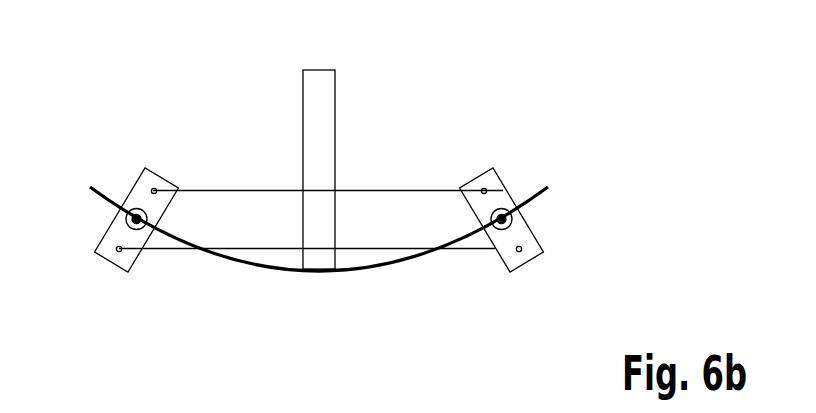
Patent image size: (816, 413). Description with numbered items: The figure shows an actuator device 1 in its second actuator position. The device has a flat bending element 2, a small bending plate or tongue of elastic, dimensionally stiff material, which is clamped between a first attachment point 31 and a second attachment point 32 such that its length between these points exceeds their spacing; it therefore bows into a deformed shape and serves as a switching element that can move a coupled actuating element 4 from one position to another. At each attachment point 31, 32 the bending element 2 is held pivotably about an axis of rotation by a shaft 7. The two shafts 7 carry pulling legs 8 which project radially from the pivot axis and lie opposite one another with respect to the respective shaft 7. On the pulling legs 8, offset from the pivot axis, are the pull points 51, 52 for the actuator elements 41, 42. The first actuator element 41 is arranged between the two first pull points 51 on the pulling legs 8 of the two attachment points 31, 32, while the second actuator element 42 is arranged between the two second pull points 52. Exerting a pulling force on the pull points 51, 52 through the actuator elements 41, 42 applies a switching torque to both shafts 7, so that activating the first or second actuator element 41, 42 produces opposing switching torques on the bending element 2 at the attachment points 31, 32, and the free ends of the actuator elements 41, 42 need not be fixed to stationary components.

The actuator device 1 is at (584, 57).
The bending element 2 is at (355, 272).
The actuating element 4 is at (323, 151).
The shaft 7 is at (150, 209).
The pulling leg 8 is at (147, 182).
The first attachment point 31 is at (125, 218).
The second attachment point 32 is at (507, 217).
The first actuator element 41 is at (243, 189).
The second actuator element 42 is at (245, 250).
The first pull point 51 is at (154, 188).
The second pull point 52 is at (118, 251).